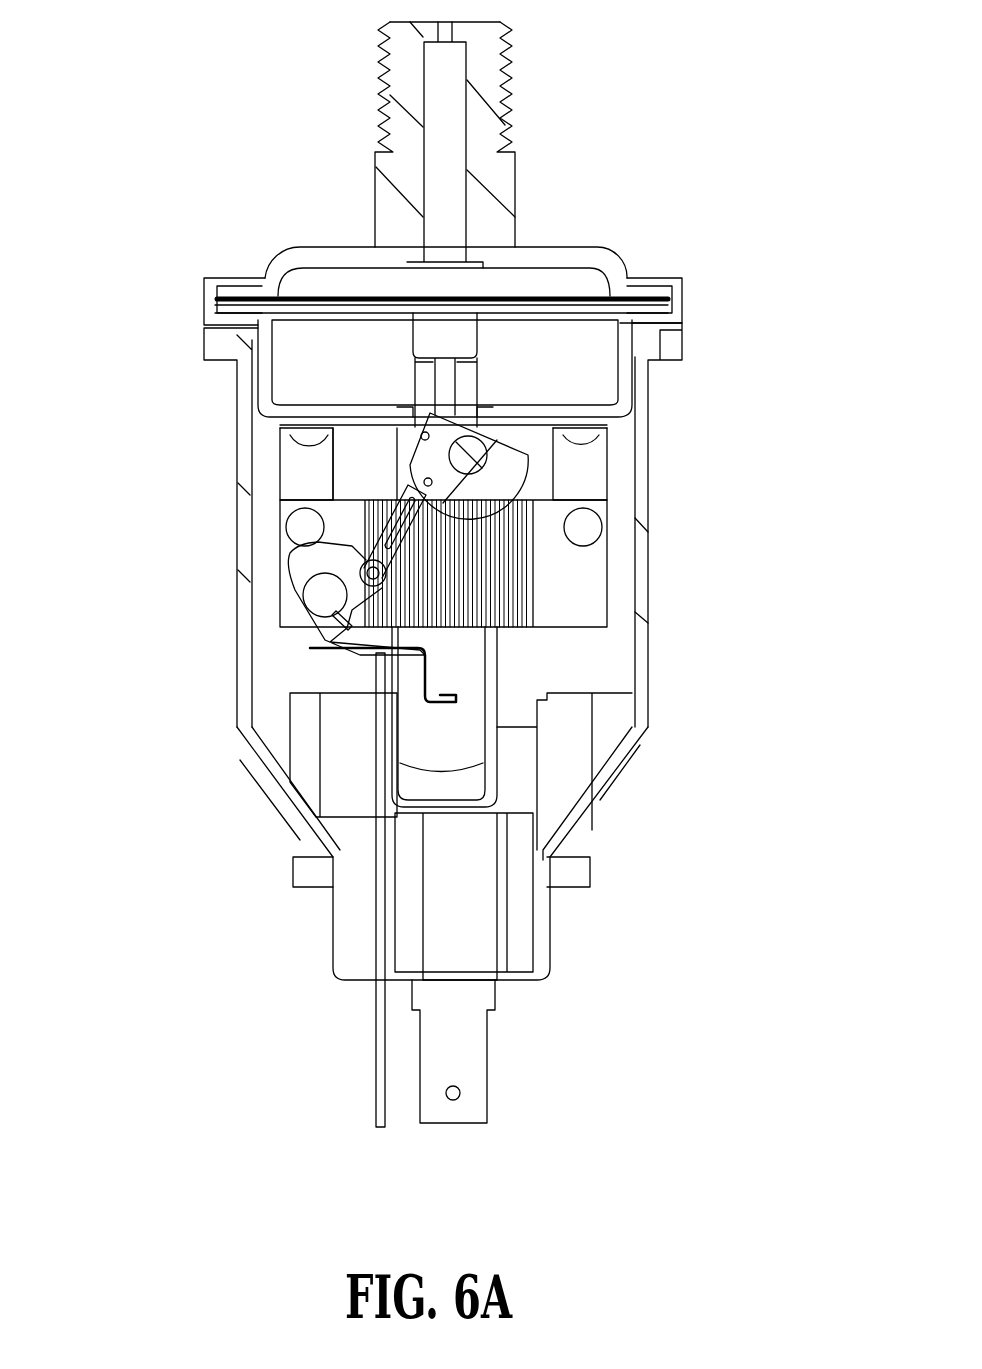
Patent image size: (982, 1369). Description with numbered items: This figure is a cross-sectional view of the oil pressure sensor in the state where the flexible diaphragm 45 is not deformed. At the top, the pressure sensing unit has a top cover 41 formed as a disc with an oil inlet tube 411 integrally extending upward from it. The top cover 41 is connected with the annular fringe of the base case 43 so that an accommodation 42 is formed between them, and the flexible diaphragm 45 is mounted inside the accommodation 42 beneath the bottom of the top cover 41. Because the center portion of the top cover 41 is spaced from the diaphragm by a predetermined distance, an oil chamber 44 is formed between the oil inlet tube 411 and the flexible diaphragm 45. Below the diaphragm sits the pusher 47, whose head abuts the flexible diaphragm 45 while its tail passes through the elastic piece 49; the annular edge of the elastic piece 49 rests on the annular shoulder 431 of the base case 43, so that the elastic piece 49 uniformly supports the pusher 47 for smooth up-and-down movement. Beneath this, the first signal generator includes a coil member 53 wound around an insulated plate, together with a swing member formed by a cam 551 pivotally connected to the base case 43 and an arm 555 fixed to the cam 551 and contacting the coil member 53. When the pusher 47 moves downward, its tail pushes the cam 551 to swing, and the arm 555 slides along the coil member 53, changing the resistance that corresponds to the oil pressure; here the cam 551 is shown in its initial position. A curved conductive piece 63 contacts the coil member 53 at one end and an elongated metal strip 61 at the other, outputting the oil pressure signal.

The oil inlet tube 411 is at (480, 70).
The top cover 41 is at (280, 267).
The annular shoulder 431 is at (233, 327).
The base case 43 is at (207, 297).
The accommodation 42 is at (300, 387).
The oil chamber 44 is at (585, 280).
The flexible diaphragm 45 is at (652, 303).
The elastic piece 49 is at (460, 337).
The pusher 47 is at (573, 313).
The cam 551 is at (513, 475).
The arm 555 is at (380, 527).
The curved conductive piece 63 is at (300, 580).
The coil member 53 is at (517, 583).
The elongated metal strip 61 is at (382, 927).